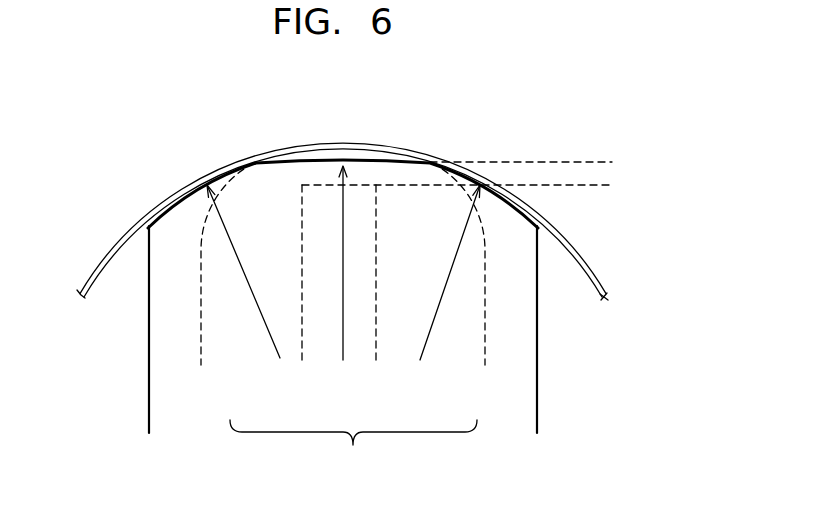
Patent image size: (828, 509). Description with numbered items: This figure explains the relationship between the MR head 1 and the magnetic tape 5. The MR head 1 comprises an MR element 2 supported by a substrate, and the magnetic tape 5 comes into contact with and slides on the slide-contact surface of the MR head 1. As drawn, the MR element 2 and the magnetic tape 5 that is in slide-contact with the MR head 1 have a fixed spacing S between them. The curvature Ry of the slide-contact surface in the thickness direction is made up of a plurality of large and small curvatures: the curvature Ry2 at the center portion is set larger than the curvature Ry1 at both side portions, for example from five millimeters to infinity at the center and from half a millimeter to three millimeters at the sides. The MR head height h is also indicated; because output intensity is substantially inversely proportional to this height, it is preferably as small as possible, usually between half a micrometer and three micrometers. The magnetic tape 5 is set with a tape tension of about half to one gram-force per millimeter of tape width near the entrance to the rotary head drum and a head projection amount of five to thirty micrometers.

The MR head 1 is at (140, 361).
The MR element 2 is at (318, 162).
The magnetic tape 5 is at (113, 250).
The spacing S is at (368, 153).
The MR head height h is at (582, 217).
The curvature in thickness direction Ry is at (353, 457).
The curvature at both side portions Ry1 is at (343, 296).
The curvature at center portion Ry2 is at (341, 298).